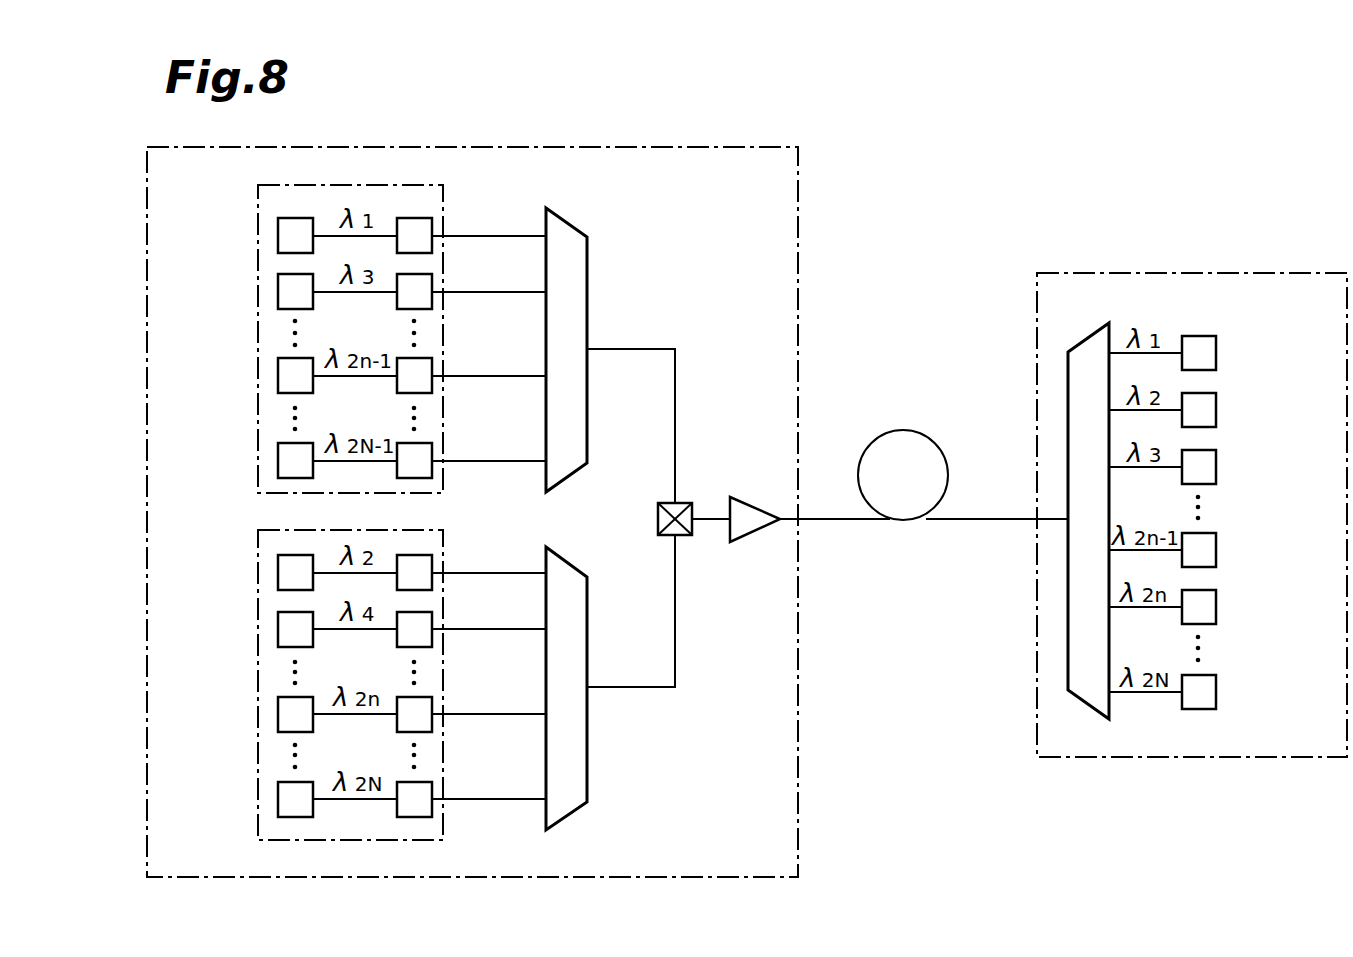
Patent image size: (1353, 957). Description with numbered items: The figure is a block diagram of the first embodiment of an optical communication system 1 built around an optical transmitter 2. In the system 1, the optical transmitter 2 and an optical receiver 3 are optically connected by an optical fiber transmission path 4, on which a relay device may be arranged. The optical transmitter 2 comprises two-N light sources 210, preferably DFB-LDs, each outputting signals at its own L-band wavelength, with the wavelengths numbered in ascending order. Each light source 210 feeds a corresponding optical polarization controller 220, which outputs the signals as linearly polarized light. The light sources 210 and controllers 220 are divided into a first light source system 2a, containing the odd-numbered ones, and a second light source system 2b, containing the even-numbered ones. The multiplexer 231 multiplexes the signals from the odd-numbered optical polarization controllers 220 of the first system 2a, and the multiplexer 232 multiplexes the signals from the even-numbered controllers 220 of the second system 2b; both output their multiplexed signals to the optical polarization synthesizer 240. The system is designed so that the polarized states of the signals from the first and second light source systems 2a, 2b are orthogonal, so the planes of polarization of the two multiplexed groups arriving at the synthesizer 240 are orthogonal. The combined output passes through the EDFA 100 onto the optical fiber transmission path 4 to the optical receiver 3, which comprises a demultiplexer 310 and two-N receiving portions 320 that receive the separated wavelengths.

The optical communication system 1 is at (1026, 214).
The optical transmitter 2 is at (703, 147).
The first light source system 2a is at (398, 185).
The second light source system 2b is at (407, 842).
The optical receiver 3 is at (1275, 273).
The optical fiber transmission path 4 is at (901, 430).
The EDFA 100 is at (755, 536).
The light sources 210 is at (228, 517).
The optical polarization controllers 220 is at (477, 507).
The multiplexer 231 is at (571, 224).
The multiplexer 232 is at (568, 813).
The optical polarization synthesizer 240 is at (688, 538).
The demultiplexer 310 is at (1089, 337).
The receiving portions 320 is at (1264, 522).